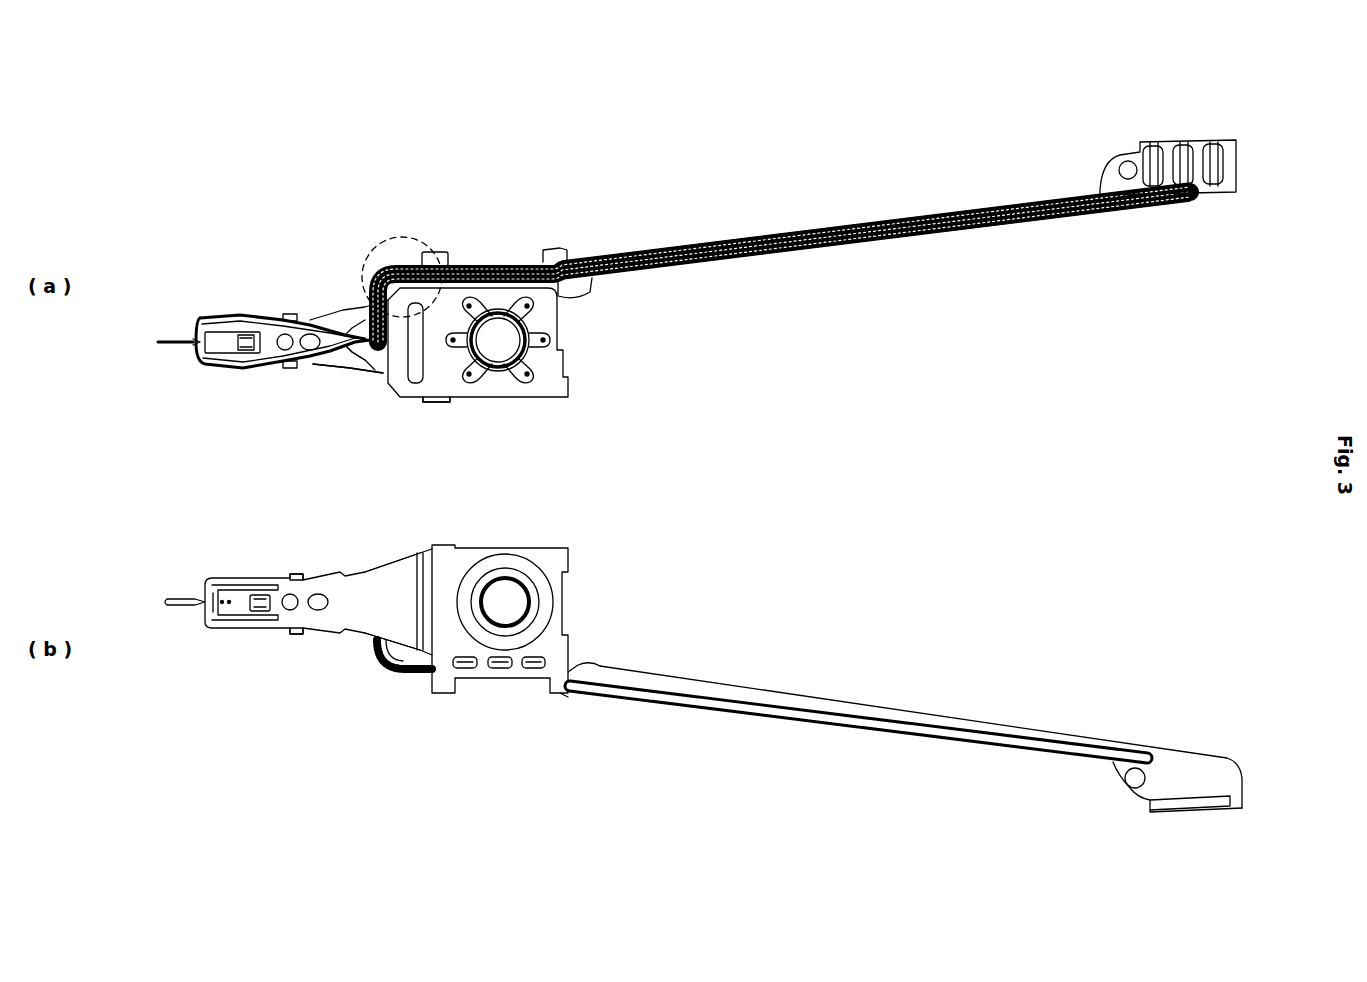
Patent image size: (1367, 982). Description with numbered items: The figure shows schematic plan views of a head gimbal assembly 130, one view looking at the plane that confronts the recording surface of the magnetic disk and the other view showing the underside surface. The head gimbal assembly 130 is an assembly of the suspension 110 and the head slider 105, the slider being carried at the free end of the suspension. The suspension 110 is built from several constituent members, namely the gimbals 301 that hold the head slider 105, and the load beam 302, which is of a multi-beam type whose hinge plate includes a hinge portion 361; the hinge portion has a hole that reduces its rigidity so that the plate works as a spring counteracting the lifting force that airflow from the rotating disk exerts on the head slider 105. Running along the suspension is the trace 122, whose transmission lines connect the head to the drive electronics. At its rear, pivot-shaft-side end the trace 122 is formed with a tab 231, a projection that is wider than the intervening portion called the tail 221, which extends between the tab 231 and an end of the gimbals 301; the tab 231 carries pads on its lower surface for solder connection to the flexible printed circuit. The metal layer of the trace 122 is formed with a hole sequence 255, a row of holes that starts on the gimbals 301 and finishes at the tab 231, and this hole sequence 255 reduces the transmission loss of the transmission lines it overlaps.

The head slider 105 is at (217, 361).
The suspension 110 is at (479, 416).
The trace 122 is at (592, 271).
The head gimbal assembly 130 is at (268, 268).
The tail 221 is at (870, 250).
The tab 231 is at (1196, 148).
The hole sequence 255 is at (708, 232).
The gimbals 301 is at (291, 371).
The load beam 302 is at (380, 392).
The hinge portion 361 is at (407, 400).